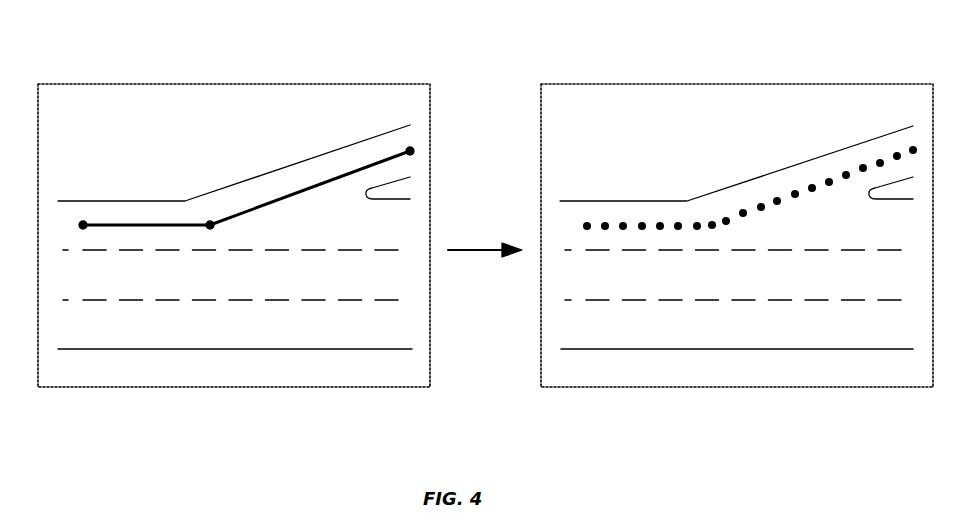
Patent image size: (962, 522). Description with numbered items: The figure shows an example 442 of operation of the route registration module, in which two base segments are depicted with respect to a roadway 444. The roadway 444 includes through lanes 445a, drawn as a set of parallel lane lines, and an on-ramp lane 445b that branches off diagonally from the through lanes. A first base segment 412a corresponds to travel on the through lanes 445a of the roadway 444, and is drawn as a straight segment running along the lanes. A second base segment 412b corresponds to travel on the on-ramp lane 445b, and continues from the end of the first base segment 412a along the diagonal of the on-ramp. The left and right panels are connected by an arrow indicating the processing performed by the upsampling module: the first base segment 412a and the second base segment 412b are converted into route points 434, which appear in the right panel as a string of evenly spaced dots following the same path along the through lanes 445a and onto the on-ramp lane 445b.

The example of operation of the route registration module 442 is at (100, 72).
The roadway 444 is at (380, 135).
The on-ramp lane 445b is at (323, 170).
The through lanes 445a is at (405, 236).
The first base segment 412a is at (158, 224).
The second base segment 412b is at (247, 213).
The route points 434 is at (766, 196).